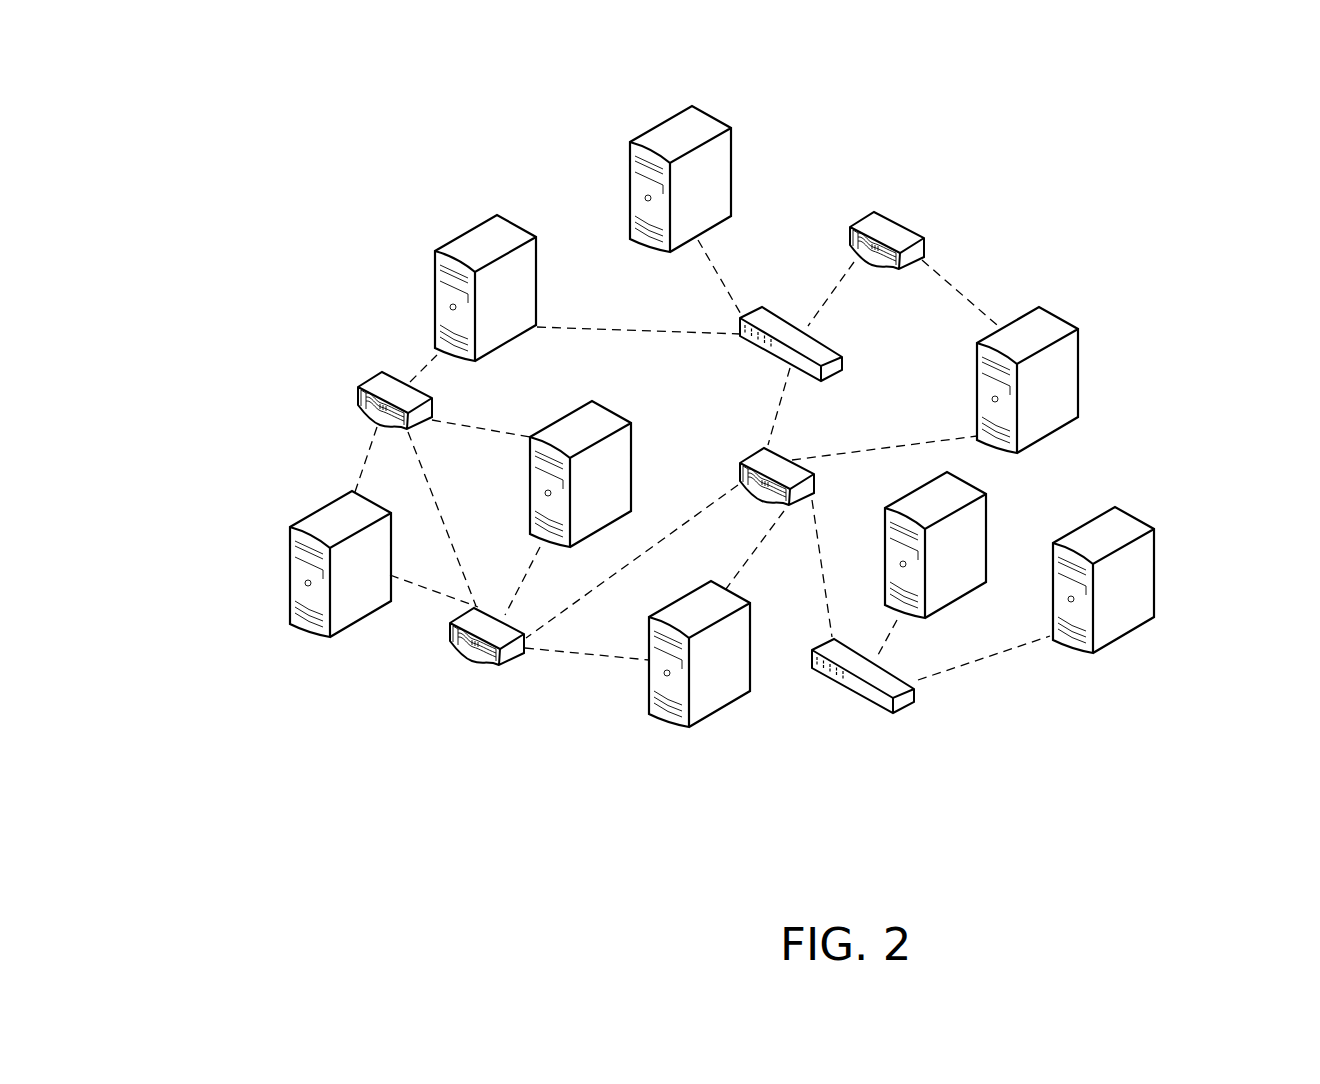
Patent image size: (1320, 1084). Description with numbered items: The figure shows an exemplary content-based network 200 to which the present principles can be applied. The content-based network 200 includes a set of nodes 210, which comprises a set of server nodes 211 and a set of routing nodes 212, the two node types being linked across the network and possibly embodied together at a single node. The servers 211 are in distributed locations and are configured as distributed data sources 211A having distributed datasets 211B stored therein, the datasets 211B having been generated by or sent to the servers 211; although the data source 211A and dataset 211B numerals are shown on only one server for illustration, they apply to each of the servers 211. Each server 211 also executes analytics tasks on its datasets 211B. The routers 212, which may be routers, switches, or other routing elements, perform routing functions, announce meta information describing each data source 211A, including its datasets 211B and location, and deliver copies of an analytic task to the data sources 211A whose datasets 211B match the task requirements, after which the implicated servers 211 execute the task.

The content-based network 200 is at (360, 86).
The set of nodes 210 is at (242, 199).
The server nodes 211 is at (781, 416).
The distributed data sources 211A is at (1109, 494).
The distributed datasets 211B is at (1168, 534).
The routing nodes 212 is at (641, 465).